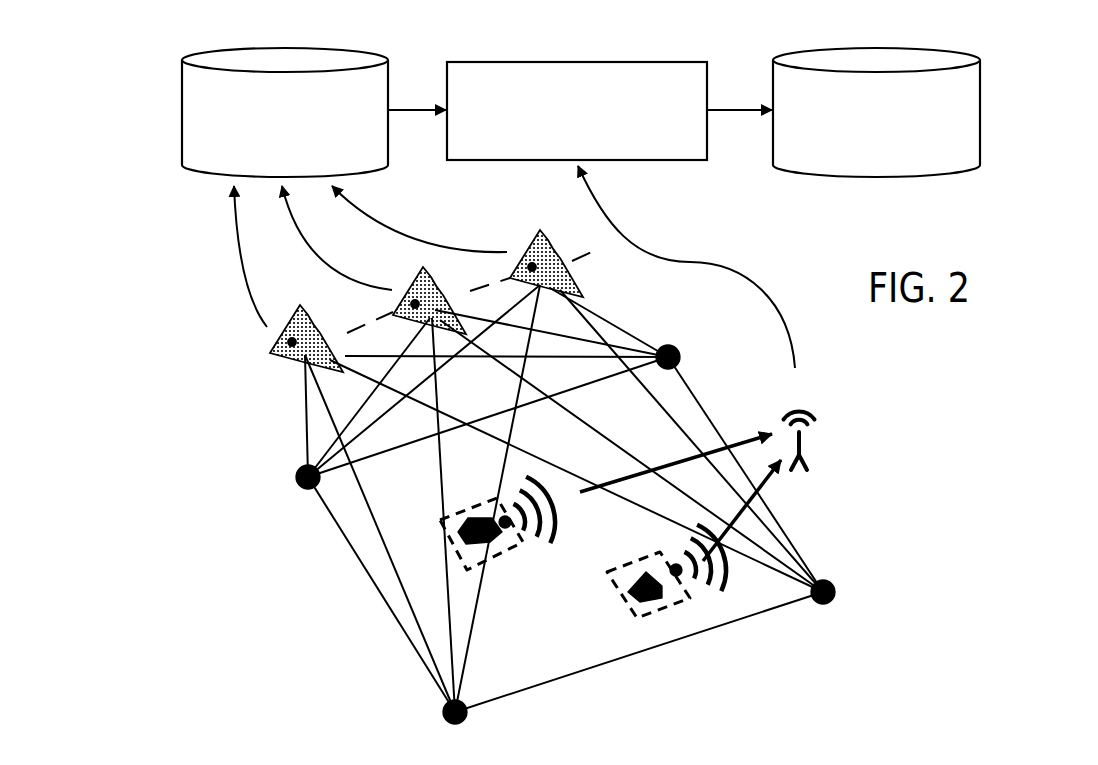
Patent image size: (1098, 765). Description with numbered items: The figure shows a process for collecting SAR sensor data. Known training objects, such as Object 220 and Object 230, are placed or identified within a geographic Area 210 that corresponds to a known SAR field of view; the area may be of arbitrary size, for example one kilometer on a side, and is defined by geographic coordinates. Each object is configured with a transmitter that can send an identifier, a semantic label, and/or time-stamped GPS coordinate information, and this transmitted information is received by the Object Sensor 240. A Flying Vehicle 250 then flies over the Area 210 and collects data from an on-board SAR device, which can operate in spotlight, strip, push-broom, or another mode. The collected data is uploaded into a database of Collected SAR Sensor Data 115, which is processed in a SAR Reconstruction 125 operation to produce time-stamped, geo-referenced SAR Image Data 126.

The collected SAR sensor data 115 is at (270, 155).
The SAR reconstruction 125 is at (562, 145).
The SAR image data 126 is at (862, 141).
The area 210 is at (382, 597).
The object 220 is at (460, 556).
The object 230 is at (647, 602).
The object sensor 240 is at (812, 433).
The flying vehicle 250 is at (292, 350).